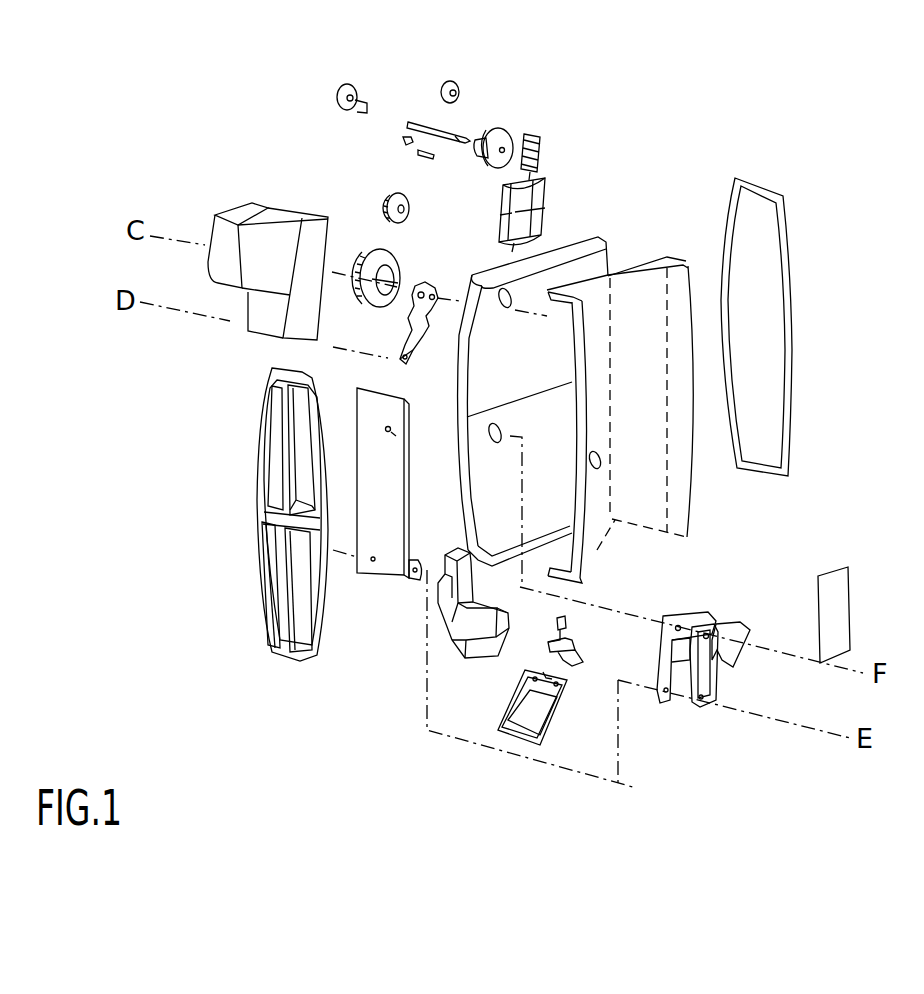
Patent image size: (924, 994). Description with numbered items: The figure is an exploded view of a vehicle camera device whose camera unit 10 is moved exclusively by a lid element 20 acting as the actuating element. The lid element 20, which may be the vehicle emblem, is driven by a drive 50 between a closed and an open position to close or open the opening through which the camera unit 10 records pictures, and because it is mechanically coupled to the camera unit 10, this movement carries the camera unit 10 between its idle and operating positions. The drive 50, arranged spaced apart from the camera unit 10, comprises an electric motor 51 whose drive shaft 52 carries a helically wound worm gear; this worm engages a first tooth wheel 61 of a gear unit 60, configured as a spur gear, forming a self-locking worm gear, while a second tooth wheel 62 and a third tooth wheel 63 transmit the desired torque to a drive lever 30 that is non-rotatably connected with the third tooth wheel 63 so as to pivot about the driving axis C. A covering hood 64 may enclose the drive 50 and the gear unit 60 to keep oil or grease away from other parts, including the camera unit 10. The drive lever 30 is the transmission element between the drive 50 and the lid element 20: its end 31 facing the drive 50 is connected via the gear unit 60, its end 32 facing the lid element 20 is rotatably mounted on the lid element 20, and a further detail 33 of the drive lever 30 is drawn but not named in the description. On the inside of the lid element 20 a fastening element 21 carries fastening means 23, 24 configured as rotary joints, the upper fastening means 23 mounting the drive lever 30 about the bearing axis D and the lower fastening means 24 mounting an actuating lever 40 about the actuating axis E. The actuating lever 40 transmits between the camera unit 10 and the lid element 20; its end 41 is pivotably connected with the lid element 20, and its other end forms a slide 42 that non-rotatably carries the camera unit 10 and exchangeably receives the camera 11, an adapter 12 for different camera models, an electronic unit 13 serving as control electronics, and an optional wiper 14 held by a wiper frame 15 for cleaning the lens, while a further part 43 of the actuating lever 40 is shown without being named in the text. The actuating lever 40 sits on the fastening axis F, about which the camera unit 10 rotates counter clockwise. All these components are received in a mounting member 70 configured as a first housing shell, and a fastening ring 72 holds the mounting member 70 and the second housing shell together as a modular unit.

The camera unit 10 is at (430, 750).
The camera 11 is at (495, 656).
The adapter 12 is at (458, 604).
The electronic unit 13 is at (833, 591).
The wiper 14 is at (573, 666).
The wiper frame 15 is at (524, 744).
The lid element 20 is at (258, 586).
The fastening element 21 is at (365, 571).
The fastening means 23 is at (396, 431).
The fastening means 24 is at (410, 576).
The drive lever 30 is at (376, 324).
The end of the drive lever 31 is at (436, 288).
The end of the drive lever 32 is at (425, 345).
The pivot hole 33 is at (421, 286).
The actuating lever 40 is at (742, 664).
The end of the actuating lever 41 is at (700, 706).
The slide 42 is at (735, 636).
The latch bracket 43 is at (681, 606).
The drive 50 is at (575, 158).
The electric motor 51 is at (530, 205).
The drive shaft 52 is at (530, 133).
The gear unit 60 is at (420, 101).
The first tooth wheel 61 is at (498, 130).
The second tooth wheel 62 is at (385, 200).
The third tooth wheel 63 is at (370, 258).
The covering hood 64 is at (246, 208).
The mounting member 70 is at (611, 272).
The fastening ring 72 is at (787, 283).